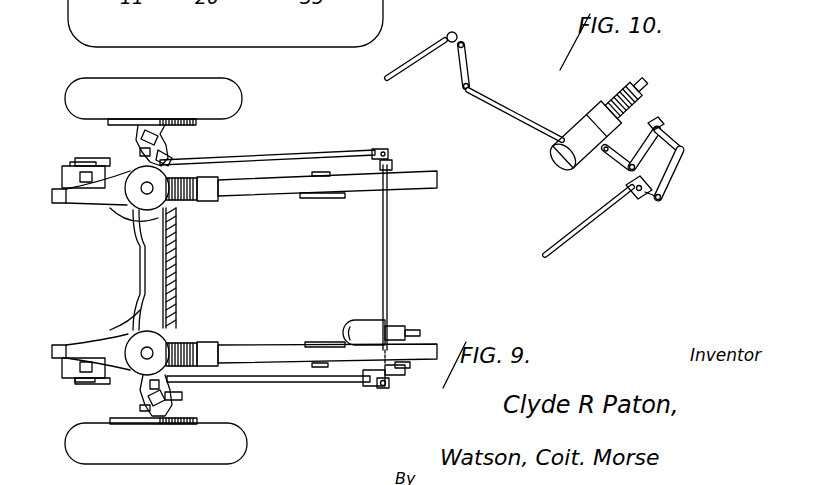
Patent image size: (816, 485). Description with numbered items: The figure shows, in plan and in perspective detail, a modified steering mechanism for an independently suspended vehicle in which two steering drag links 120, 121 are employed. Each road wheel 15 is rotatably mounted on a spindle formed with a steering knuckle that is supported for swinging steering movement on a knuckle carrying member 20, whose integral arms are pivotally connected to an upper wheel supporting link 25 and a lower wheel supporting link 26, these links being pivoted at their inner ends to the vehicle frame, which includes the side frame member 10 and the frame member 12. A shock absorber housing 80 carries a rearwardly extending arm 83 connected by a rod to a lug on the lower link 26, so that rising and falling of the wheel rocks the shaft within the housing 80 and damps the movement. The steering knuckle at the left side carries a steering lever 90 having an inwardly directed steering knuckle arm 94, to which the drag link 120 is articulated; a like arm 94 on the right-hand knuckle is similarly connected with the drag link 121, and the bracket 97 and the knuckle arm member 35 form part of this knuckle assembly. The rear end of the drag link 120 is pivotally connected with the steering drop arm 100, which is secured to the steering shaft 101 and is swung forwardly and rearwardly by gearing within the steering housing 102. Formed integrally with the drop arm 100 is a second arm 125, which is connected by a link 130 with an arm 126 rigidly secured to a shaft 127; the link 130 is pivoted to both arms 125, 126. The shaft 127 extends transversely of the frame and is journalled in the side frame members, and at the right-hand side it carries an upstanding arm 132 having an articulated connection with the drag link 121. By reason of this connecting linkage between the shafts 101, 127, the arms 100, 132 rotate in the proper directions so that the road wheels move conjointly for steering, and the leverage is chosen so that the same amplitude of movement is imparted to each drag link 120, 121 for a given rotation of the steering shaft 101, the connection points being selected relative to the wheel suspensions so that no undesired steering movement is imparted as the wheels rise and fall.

In FIG. 9, the side frame member 10 is at (281, 187).
In FIG. 9, the frame side member 12 is at (145, 242).
In FIG. 9, the road wheel 15 is at (65, 88).
In FIG. 9, the knuckle carrying member 20 is at (150, 412).
In FIG. 9, the upper wheel supporting link 25 is at (170, 157).
In FIG. 9, the lower wheel supporting link 26 is at (182, 397).
In FIG. 9, the steering knuckle arm 35 is at (135, 198).
In FIG. 9, the shock absorber housing 80 is at (62, 181).
In FIG. 9, the rearwardly extending arm 83 is at (76, 162).
In FIG. 9, the steering lever 90 is at (135, 410).
In FIG. 9, the steering knuckle arm 94 is at (138, 149).
In FIG. 9, the upper bracket 97 is at (134, 133).
In FIG. 9, the steering drop arm 100 is at (370, 378).
In FIG. 10, the steering drop arm 100 is at (628, 184).
In FIG. 10, the steering shaft 101 is at (598, 165).
In FIG. 9, the steering housing 102 is at (361, 321).
In FIG. 10, the steering housing 102 is at (555, 143).
In FIG. 9, the steering drag link 120 is at (286, 382).
In FIG. 10, the steering drag link 120 is at (575, 233).
In FIG. 9, the steering drag link 121 is at (298, 158).
In FIG. 10, the steering drag link 121 is at (396, 81).
In FIG. 9, the second arm 125 is at (368, 387).
In FIG. 10, the second arm 125 is at (642, 160).
In FIG. 9, the arm 126 is at (410, 366).
In FIG. 10, the arm 126 is at (673, 174).
In FIG. 9, the shaft 127 is at (388, 241).
In FIG. 10, the shaft 127 is at (505, 112).
In FIG. 9, the link 130 is at (403, 373).
In FIG. 10, the link 130 is at (664, 132).
In FIG. 9, the upstanding arm 132 is at (378, 163).
In FIG. 10, the upstanding arm 132 is at (469, 65).